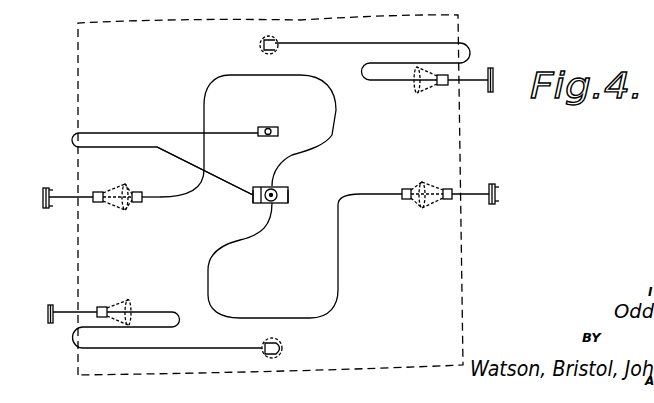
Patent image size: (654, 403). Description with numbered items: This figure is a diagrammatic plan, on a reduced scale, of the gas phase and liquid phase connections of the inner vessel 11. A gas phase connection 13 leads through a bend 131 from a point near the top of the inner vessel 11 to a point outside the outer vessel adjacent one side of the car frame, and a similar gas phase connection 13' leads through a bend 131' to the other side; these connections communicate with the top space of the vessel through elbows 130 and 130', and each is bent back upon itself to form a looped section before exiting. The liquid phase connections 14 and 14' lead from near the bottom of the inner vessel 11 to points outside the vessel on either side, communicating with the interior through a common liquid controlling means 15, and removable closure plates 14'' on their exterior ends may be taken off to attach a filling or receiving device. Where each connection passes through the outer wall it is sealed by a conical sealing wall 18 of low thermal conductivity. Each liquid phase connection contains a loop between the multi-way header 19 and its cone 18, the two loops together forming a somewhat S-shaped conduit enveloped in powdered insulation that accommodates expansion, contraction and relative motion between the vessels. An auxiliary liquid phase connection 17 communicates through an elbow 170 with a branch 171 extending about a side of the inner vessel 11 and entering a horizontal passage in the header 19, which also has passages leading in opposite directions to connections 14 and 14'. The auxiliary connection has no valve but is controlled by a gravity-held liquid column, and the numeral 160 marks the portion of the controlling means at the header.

The inner vessel 11 is at (78, 76).
The gas phase connection 13 is at (113, 300).
The gas phase connection 13' is at (433, 91).
The liquid phase connection 14 is at (305, 256).
The liquid phase connection 14' is at (248, 136).
The closure plate 14'' is at (279, 184).
The liquid controlling means 15 is at (282, 186).
The auxiliary liquid phase connection 17 is at (257, 136).
The conical sealing wall 18 is at (422, 92).
The multi-way header 19 is at (280, 204).
The elbow 130 is at (294, 344).
The elbow 130' is at (240, 48).
The bend 131 is at (167, 333).
The bend 131' is at (372, 40).
The hub inlet port 160 is at (257, 203).
The elbow 170 is at (272, 128).
The branch 171 is at (170, 133).